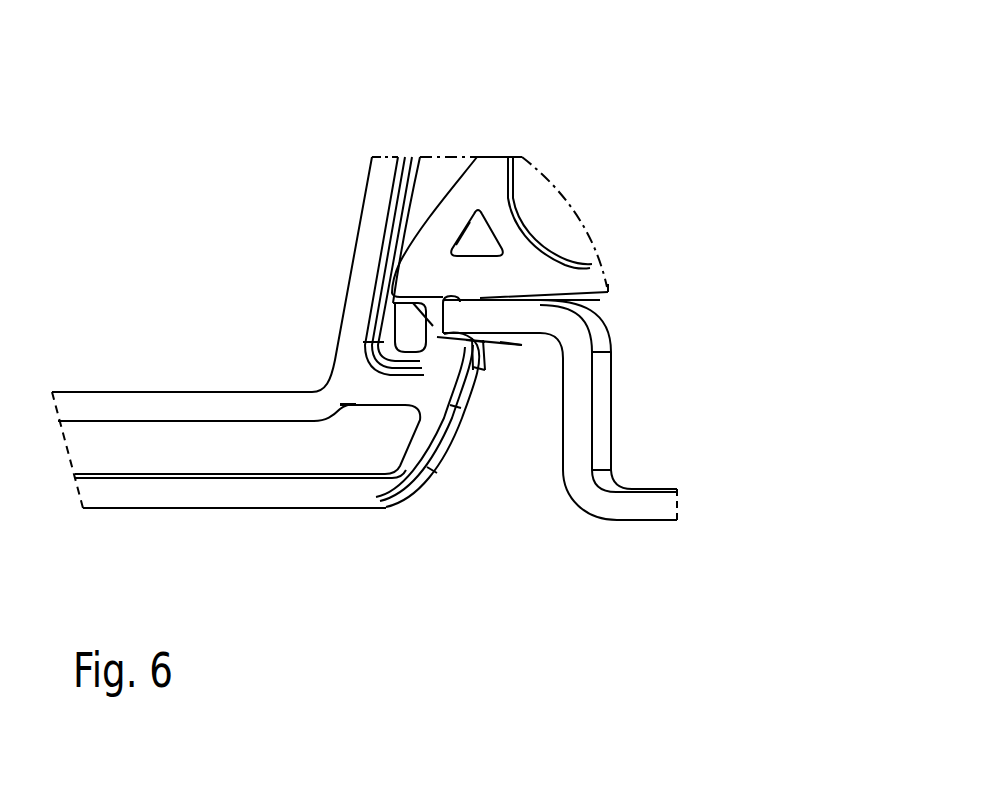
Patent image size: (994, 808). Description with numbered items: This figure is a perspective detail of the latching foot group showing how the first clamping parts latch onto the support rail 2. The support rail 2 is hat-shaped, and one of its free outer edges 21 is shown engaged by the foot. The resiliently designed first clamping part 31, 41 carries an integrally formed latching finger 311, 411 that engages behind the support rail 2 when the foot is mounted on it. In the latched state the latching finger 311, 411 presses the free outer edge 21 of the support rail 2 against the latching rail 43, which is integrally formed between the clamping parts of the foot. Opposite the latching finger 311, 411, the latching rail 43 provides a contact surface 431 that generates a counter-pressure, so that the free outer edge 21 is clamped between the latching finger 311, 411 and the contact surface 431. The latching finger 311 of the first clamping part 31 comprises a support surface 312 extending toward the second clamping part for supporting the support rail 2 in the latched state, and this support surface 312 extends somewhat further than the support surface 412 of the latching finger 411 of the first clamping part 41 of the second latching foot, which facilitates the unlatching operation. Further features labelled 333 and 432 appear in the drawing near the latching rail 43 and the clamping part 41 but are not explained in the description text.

The support rail 2 is at (643, 507).
The free outer edge 21 is at (458, 323).
The first clamping part 31 is at (432, 483).
The latching finger 311 is at (467, 347).
The support surface 312 is at (520, 343).
The seal portion 333 is at (398, 341).
The first clamping part 41 is at (315, 492).
The latching finger 411 is at (440, 350).
The support surface 412 is at (430, 310).
The latching rail 43 is at (462, 195).
The contact surface 431 is at (495, 298).
The stop face of support bracket 432 is at (433, 326).